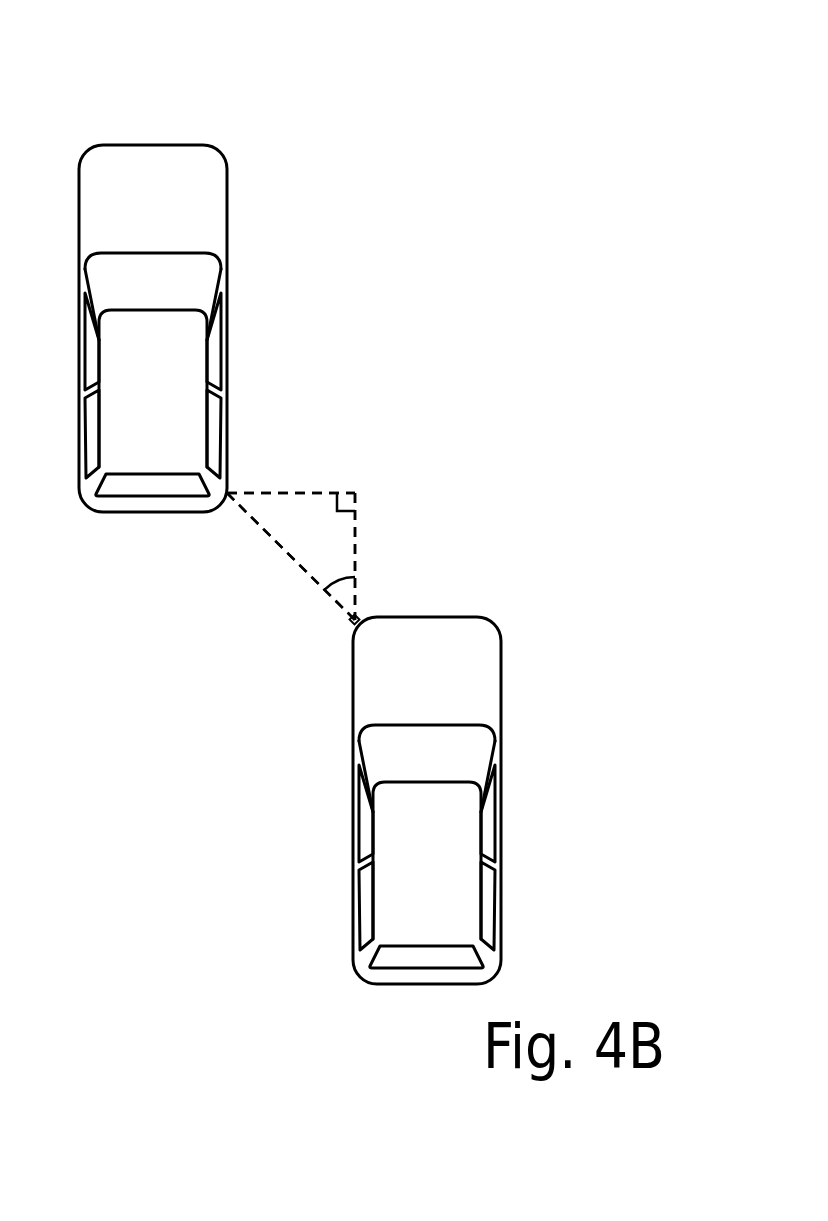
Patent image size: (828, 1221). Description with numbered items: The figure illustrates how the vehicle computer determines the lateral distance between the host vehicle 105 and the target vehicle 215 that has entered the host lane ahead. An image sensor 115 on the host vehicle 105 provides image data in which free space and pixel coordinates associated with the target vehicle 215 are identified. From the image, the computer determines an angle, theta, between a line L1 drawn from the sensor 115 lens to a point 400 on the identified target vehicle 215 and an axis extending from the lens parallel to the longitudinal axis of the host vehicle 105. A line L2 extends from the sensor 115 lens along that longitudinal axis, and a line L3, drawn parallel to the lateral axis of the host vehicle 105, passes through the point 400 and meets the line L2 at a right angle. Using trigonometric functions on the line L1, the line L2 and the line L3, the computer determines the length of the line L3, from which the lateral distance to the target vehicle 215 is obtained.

The target vehicle 215 is at (113, 145).
The host vehicle 105 is at (500, 842).
The point on the target vehicle 400 is at (225, 497).
The sensor 115 is at (353, 625).
The line L3 is at (330, 493).
The line L2 is at (355, 555).
The line L1 is at (260, 528).